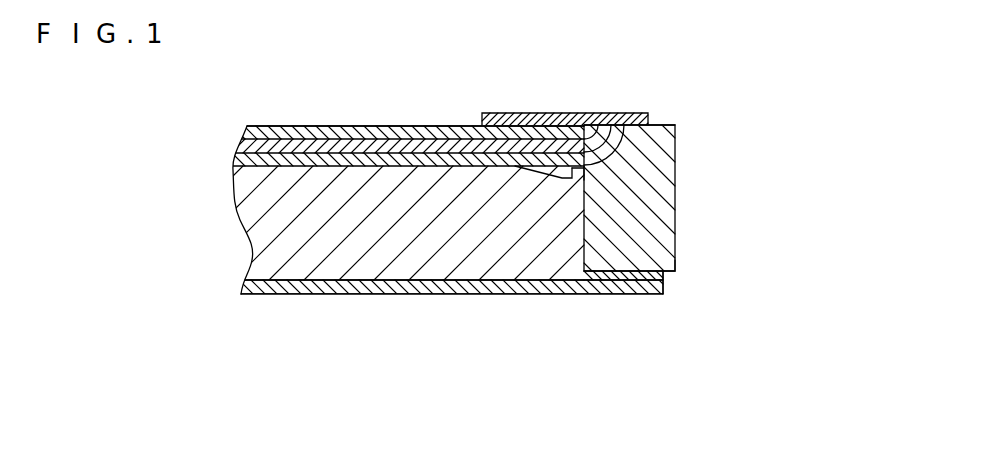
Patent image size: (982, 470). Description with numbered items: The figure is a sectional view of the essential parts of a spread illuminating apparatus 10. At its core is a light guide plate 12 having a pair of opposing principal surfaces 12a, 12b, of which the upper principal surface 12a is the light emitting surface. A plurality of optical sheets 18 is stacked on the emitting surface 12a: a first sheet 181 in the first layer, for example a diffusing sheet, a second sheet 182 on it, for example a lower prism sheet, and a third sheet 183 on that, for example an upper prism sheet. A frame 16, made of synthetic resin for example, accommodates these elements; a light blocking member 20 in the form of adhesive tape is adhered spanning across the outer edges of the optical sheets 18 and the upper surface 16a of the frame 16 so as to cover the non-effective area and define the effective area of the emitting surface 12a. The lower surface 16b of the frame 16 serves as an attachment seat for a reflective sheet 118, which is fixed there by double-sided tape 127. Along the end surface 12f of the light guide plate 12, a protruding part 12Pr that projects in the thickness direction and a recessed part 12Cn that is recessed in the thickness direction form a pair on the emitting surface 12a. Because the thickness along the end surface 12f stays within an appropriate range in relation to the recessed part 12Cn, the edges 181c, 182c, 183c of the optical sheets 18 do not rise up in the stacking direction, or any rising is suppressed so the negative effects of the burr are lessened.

The spread illuminating apparatus 10 is at (793, 55).
The light guide plate 12 is at (414, 225).
The principal surface (emitting surface) 12a is at (424, 126).
The principal surface 12b is at (367, 294).
The end surface 12f is at (648, 294).
The recessed part 12Cn is at (548, 165).
The protruding part 12Pr is at (594, 172).
The frame 16 is at (656, 227).
The upper surface of the frame 16a is at (667, 125).
The lower surface of the frame 16b is at (678, 288).
The optical sheets 18 is at (400, 60).
The first sheet 181 is at (277, 128).
The second sheet 182 is at (302, 128).
The third sheet 183 is at (354, 126).
The edge of the first sheet 181c is at (626, 127).
The edge of the second sheet 182c is at (612, 127).
The edge of the third sheet 183c is at (596, 126).
The light blocking member 20 is at (566, 113).
The reflective sheet 118 is at (501, 294).
The double-sided tape 127 is at (606, 294).